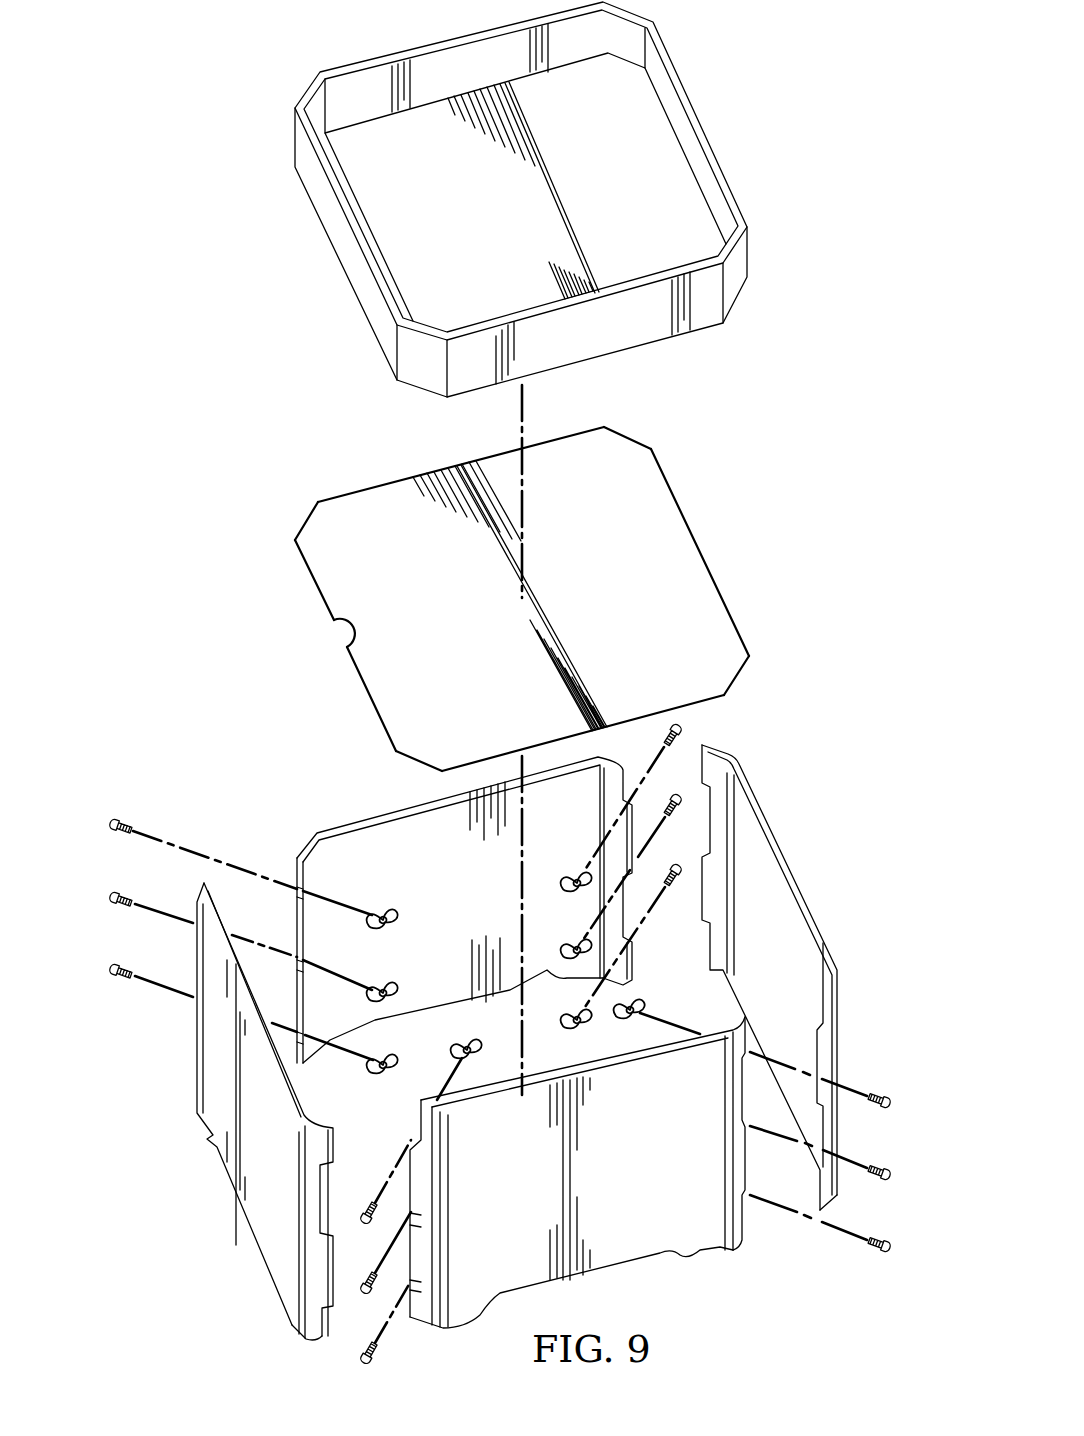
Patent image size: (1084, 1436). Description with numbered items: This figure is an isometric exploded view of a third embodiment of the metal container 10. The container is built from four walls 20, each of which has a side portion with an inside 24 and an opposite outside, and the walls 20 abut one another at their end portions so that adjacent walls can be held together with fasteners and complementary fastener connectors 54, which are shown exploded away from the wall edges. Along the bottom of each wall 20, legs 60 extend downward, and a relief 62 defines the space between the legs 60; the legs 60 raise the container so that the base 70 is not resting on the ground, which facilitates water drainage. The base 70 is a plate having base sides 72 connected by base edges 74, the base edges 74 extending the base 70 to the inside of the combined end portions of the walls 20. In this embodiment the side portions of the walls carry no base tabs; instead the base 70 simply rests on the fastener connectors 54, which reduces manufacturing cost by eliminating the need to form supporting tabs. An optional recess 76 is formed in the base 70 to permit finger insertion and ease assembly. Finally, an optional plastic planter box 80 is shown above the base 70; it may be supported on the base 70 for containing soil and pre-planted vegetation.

The metal container 10 is at (190, 365).
The wall 20 is at (512, 1041).
The inside 24 is at (432, 919).
The fastener connector 54 is at (392, 910).
The leg 60 is at (290, 1313).
The relief 62 is at (640, 1268).
The base 70 is at (528, 594).
The base side 72 is at (498, 449).
The base edge 74 is at (625, 435).
The recess 76 is at (340, 636).
The plastic planter box 80 is at (707, 133).